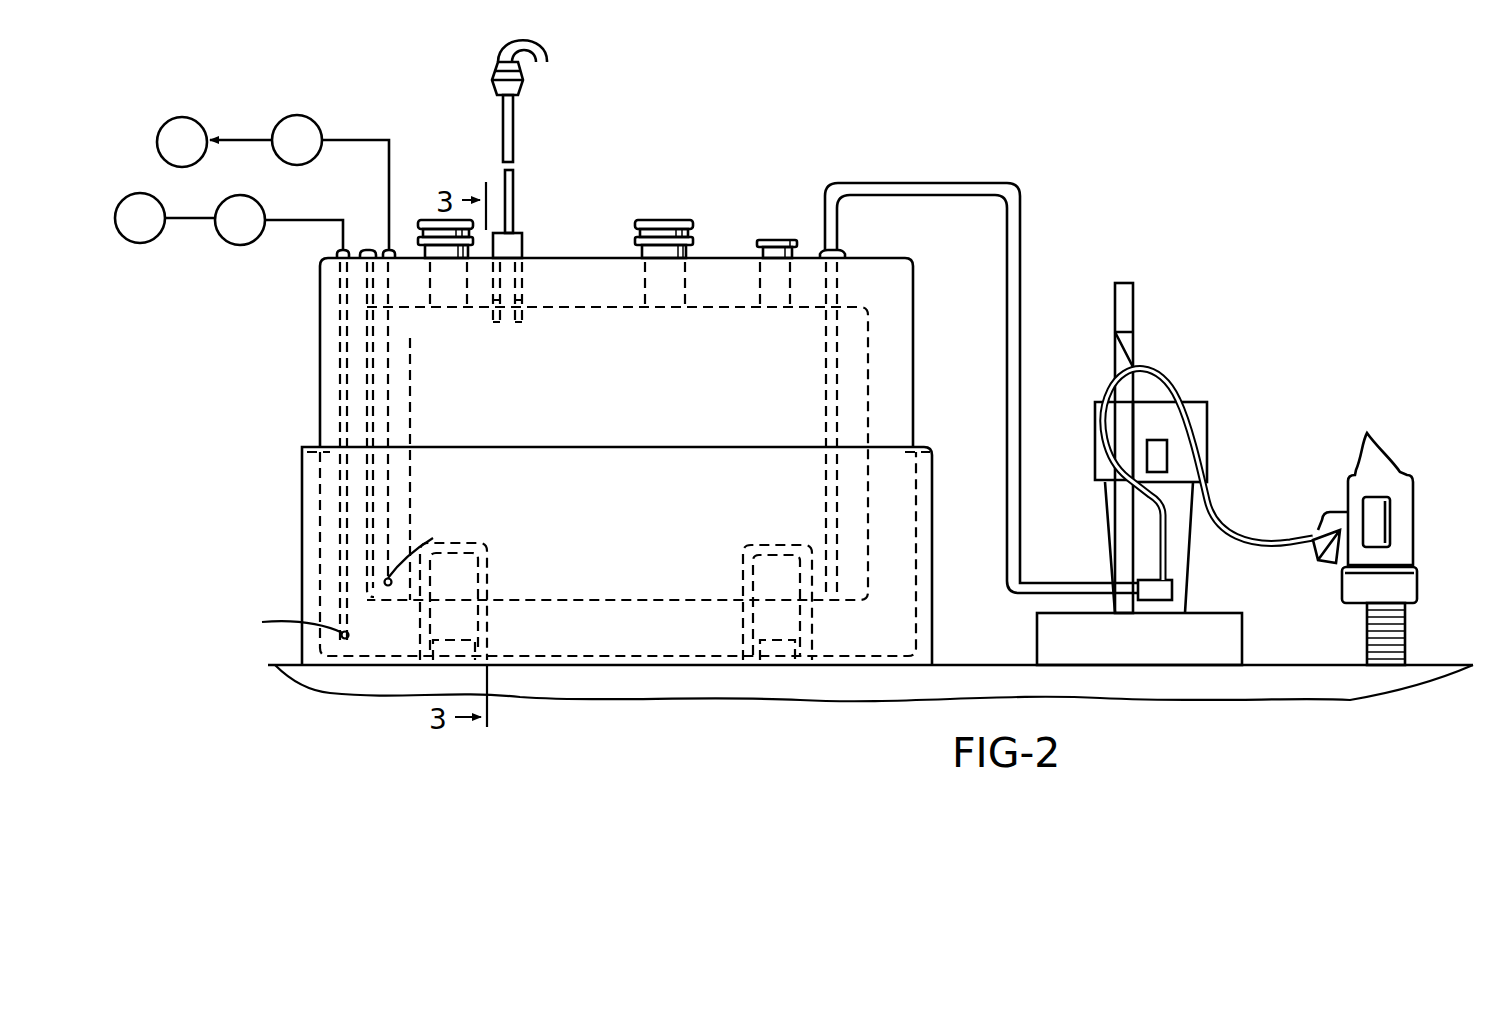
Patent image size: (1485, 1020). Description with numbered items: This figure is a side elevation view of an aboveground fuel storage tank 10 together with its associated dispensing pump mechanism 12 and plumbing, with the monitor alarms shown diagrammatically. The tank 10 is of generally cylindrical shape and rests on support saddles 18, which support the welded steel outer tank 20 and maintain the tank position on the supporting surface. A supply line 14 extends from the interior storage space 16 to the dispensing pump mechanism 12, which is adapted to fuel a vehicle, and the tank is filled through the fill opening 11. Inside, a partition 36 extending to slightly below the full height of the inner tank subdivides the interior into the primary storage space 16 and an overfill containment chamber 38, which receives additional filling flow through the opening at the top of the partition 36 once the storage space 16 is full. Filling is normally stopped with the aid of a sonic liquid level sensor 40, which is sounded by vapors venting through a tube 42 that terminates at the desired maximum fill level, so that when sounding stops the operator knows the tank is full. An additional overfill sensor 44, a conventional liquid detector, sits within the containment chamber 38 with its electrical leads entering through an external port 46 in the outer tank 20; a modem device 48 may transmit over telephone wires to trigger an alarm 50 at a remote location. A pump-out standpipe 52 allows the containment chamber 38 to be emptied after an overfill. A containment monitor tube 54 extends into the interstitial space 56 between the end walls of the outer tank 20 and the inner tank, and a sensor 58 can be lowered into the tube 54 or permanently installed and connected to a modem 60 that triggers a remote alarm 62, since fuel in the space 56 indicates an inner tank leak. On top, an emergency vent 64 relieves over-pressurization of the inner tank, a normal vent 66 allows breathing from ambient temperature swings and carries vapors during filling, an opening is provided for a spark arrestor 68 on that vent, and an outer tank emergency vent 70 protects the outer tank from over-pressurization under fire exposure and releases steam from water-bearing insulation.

The fuel storage tank 10 is at (838, 142).
The fill opening 11 is at (772, 238).
The dispensing pump mechanism 12 is at (1237, 352).
The supply line 14 is at (955, 160).
The interior storage space 16 is at (676, 330).
The support saddles 18 is at (490, 563).
The outer tank 20 is at (315, 323).
The partition 36 is at (412, 412).
The overfill containment chamber 38 is at (388, 405).
The sonic liquid level sensor 40 is at (523, 245).
The tube 42 is at (525, 323).
The overfill alarm or sensor 44 is at (433, 538).
The external port 46 is at (372, 250).
The modem device 48 is at (312, 118).
The alarm 50 is at (192, 120).
The pump-out standpipe 52 is at (367, 340).
The containment monitor tube 54 is at (337, 428).
The interstitial space 56 is at (337, 503).
The sensor 58 is at (262, 622).
The modem 60 is at (258, 170).
The alarm 62 is at (150, 168).
The emergency vent 64 is at (424, 220).
The normal vent 66 is at (486, 71).
The spark arrestor 68 is at (520, 88).
The outer tank emergency vent 70 is at (655, 222).